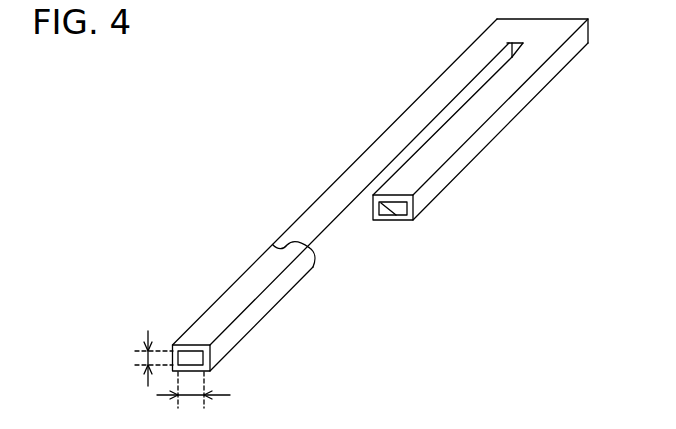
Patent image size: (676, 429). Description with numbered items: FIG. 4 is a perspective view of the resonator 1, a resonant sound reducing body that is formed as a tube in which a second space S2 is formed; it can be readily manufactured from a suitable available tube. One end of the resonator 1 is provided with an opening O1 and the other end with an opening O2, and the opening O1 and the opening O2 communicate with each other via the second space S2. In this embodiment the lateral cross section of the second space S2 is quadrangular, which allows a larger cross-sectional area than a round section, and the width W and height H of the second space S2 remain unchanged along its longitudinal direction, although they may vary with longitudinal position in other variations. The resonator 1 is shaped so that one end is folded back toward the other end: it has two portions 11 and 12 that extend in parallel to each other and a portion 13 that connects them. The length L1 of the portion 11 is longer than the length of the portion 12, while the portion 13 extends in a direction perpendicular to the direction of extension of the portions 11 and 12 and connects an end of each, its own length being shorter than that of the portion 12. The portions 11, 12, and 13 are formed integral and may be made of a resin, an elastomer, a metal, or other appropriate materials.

The resonator 1 is at (406, 206).
The portion 11 is at (341, 215).
The portion 12 is at (530, 60).
The portion 13 is at (501, 196).
The opening O1 is at (204, 352).
The opening O2 is at (374, 206).
The second space S2 is at (272, 299).
The length L1 is at (335, 139).
The height H is at (154, 345).
The width W is at (206, 390).